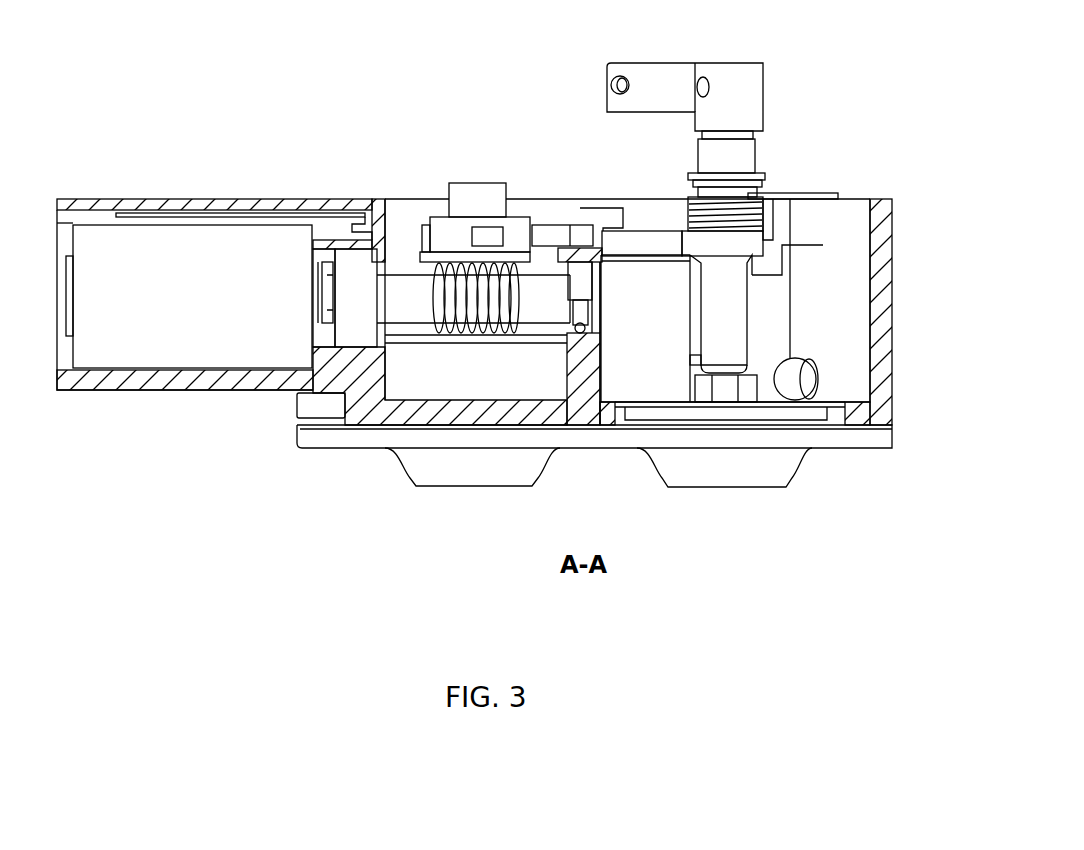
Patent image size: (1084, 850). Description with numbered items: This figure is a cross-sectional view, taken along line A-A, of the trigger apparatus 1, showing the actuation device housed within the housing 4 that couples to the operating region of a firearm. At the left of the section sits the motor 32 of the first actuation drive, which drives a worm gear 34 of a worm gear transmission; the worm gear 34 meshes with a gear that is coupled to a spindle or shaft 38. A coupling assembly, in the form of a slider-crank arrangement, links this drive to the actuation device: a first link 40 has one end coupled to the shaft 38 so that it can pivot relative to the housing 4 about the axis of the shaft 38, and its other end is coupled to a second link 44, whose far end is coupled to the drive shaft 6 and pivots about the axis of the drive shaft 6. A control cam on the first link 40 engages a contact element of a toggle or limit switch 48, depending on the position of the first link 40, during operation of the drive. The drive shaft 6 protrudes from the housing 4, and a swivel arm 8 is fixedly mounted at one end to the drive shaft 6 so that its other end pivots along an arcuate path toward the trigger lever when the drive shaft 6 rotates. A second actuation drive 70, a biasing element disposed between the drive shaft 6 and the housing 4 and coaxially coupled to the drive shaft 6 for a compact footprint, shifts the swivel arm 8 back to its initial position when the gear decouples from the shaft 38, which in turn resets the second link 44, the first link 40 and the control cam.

The trigger apparatus 1 is at (236, 178).
The housing 4 is at (118, 208).
The drive shaft 6 is at (747, 160).
The swivel arm 8 is at (635, 75).
The motor 32 is at (174, 302).
The worm gear 34 is at (533, 307).
The shaft 38 is at (483, 190).
The first link 40 is at (555, 225).
The second link 44 is at (667, 243).
The limit switch 48 is at (445, 228).
The second actuation drive 70 is at (800, 193).